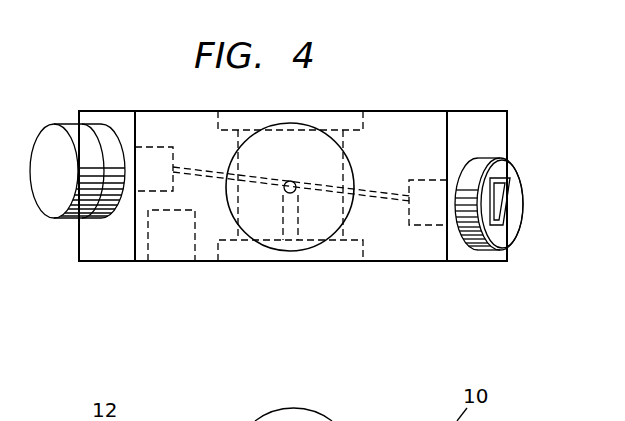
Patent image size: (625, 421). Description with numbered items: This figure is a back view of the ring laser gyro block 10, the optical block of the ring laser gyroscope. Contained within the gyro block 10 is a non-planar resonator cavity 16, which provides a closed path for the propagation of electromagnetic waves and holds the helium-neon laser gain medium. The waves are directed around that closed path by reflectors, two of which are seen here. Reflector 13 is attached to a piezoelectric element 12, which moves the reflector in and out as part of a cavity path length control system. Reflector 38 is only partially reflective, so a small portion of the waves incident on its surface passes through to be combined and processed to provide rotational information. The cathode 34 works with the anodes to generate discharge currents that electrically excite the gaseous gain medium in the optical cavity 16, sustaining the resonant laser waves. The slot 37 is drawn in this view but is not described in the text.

The ring laser gyro block 10 is at (407, 90).
The piezoelectric element 12 is at (73, 130).
The reflector 13 is at (102, 130).
The non-planar resonator cavity 16 is at (380, 203).
The cathode 34 is at (348, 162).
The slot 37 is at (510, 188).
The reflector 38 is at (515, 212).